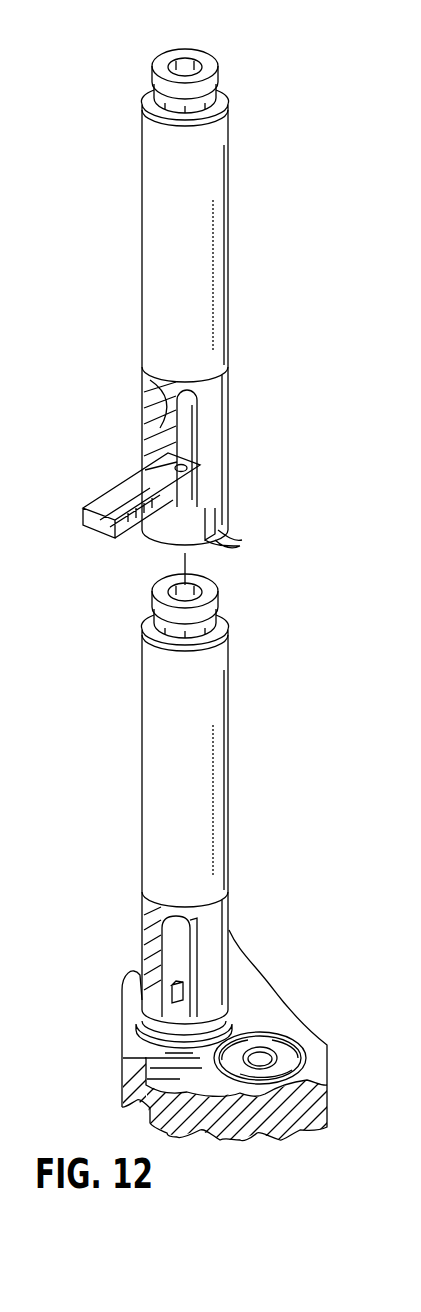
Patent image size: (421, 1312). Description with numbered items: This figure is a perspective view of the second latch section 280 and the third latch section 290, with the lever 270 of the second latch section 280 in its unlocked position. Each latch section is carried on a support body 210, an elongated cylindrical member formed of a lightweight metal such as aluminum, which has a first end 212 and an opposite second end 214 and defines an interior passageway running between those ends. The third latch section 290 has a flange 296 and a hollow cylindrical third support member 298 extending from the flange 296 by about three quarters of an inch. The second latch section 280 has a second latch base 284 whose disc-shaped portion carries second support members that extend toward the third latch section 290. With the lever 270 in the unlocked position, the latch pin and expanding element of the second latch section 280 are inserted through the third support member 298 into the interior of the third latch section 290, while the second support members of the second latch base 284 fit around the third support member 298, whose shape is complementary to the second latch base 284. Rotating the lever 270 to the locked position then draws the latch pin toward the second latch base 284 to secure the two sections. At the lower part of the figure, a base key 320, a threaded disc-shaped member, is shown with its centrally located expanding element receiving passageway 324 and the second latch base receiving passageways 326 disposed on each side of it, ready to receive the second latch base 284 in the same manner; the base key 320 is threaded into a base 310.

The third latch section 290 is at (204, 358).
The third support member 298 is at (152, 75).
The flange 296 is at (147, 93).
The second end 214 is at (222, 118).
The support body 210 is at (148, 203).
The first end 212 is at (228, 368).
The second latch section 280 is at (235, 404).
The lever 270 is at (123, 475).
The second latch base 284 is at (227, 520).
The base key 320 is at (242, 997).
The base 310 is at (128, 1043).
The expanding element receiving passageway 324 is at (269, 1050).
The second latch base receiving passageways 326 is at (300, 1058).